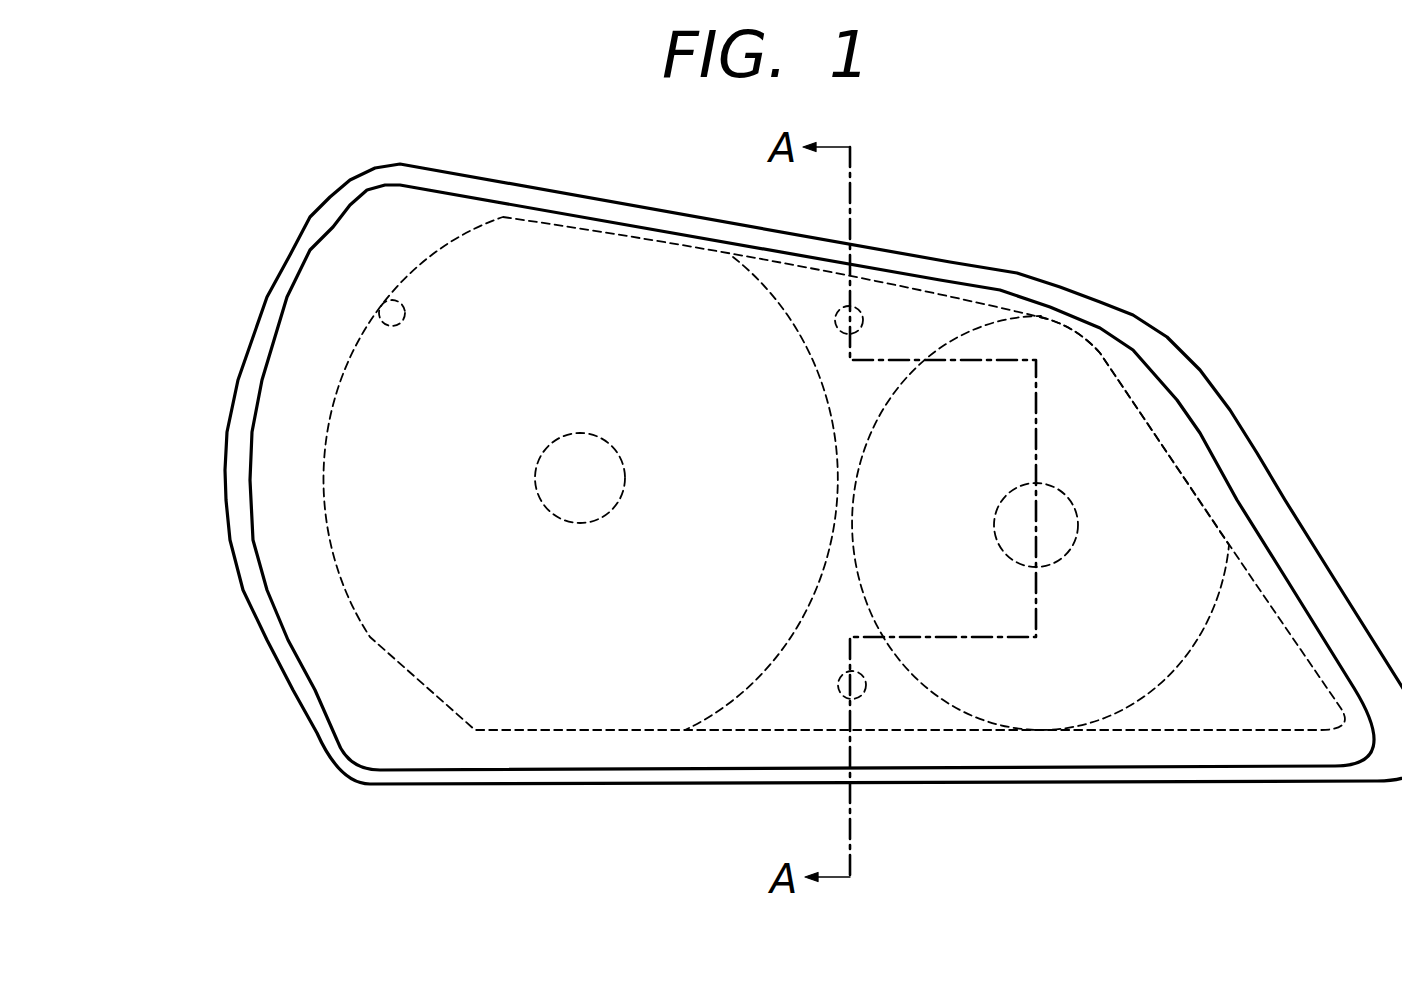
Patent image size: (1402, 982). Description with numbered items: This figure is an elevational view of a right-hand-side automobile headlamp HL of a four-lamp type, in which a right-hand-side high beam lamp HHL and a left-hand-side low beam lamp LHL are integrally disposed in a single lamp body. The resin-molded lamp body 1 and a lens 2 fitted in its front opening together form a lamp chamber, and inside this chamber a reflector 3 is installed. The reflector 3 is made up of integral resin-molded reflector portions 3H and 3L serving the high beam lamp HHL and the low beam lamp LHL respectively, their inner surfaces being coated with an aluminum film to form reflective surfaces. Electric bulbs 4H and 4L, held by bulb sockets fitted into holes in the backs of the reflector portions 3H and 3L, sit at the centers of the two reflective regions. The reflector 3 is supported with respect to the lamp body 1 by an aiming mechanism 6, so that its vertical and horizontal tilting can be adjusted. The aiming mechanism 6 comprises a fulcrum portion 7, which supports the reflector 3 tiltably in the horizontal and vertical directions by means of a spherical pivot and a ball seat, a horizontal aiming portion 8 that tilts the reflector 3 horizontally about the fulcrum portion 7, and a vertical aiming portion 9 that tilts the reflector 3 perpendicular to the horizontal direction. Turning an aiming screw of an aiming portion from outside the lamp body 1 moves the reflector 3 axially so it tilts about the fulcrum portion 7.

The lamp body 1 is at (275, 299).
The lens 2 is at (267, 432).
The reflector 3 is at (1283, 733).
The reflector portion 3L is at (367, 635).
The reflector portion 3H is at (1208, 620).
The electric bulb 4L is at (580, 433).
The electric bulb 4H is at (1078, 531).
The aiming mechanism 6 is at (978, 225).
The fulcrum portion 7 is at (861, 308).
The horizontal aiming portion 8 is at (380, 302).
The vertical aiming portion 9 is at (863, 696).
The automobile headlamp HL is at (1055, 276).
The low beam lamp LHL is at (553, 798).
The high beam lamp HHL is at (1100, 787).